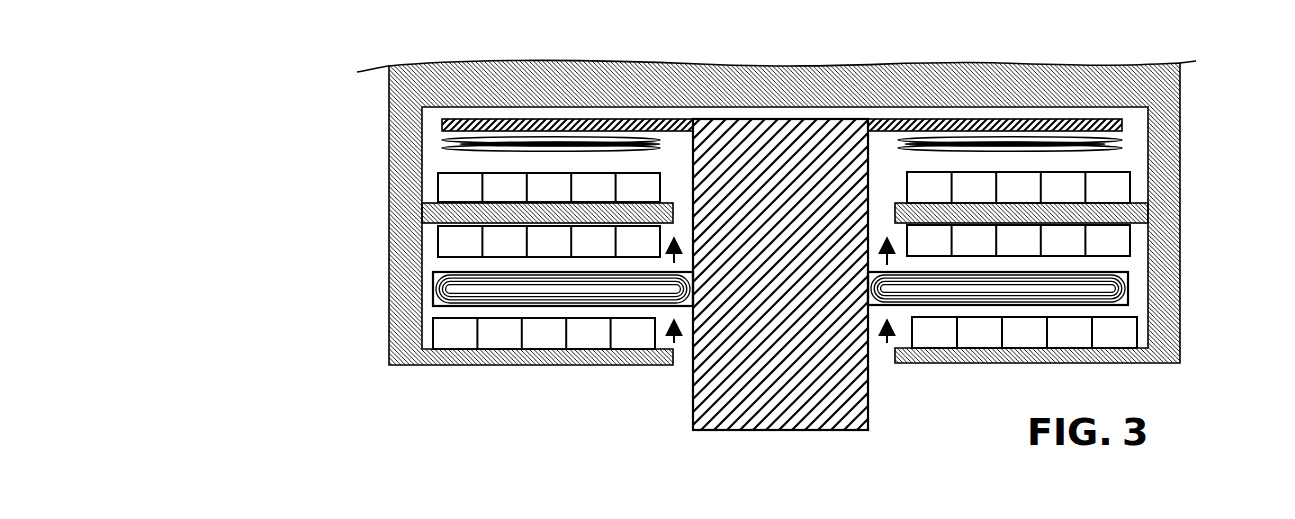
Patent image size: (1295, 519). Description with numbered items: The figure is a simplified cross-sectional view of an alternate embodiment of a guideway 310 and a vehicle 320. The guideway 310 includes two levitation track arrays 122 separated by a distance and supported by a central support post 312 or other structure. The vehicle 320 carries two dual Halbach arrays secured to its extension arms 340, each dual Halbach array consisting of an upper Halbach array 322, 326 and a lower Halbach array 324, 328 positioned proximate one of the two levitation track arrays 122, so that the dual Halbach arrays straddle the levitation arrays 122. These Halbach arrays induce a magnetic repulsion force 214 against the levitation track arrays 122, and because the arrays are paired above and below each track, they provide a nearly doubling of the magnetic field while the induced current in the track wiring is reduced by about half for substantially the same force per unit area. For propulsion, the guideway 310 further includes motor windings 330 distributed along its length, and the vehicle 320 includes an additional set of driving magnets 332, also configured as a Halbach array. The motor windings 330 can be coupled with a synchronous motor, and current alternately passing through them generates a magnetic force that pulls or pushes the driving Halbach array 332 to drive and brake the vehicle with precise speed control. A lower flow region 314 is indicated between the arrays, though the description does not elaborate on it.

The guideway 310 is at (894, 412).
The support post 312 is at (700, 414).
The lower flow passage 314 is at (670, 340).
The magnetic repulsion force 214 is at (668, 258).
The vehicle 320 is at (999, 74).
The motor windings 330 is at (442, 138).
The driving magnets 332 is at (438, 178).
The extension arms 340 is at (430, 210).
The upper Halbach array 322 is at (440, 240).
The upper Halbach array 326 is at (1120, 240).
The levitation track array 122 is at (440, 283).
The lower Halbach array 324 is at (440, 330).
The lower Halbach array 328 is at (1125, 330).